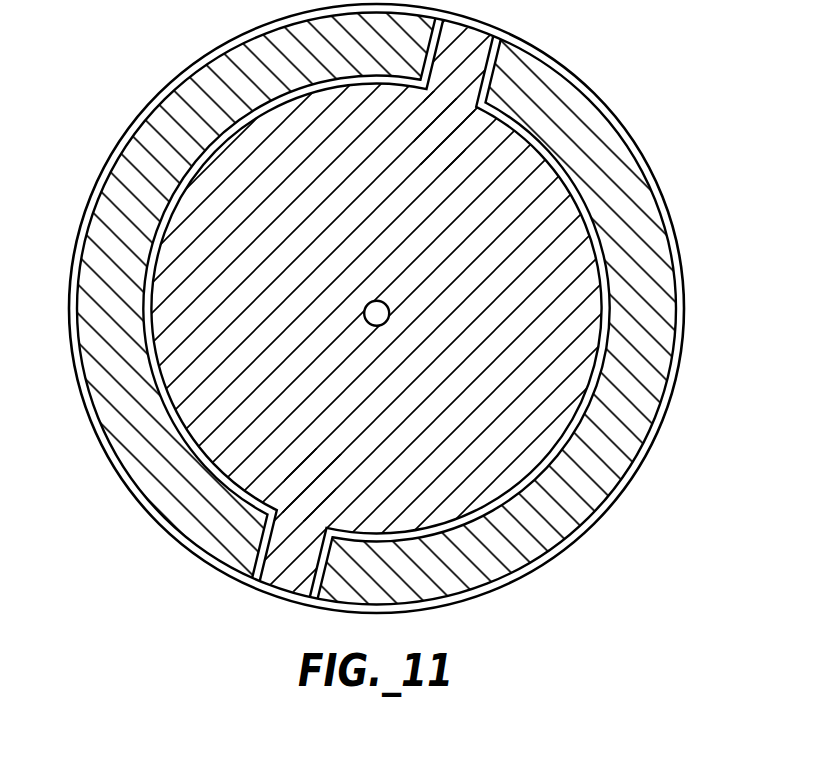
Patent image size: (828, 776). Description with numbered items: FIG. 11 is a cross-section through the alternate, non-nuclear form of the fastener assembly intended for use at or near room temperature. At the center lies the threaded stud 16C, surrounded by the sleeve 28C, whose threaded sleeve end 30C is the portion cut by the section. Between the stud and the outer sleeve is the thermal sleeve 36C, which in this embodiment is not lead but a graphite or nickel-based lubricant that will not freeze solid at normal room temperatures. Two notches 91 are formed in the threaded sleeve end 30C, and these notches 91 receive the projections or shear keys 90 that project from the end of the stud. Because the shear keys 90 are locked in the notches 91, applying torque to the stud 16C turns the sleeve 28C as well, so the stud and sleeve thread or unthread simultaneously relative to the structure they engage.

The stud 16C is at (578, 257).
The sleeve 28C is at (653, 343).
The threaded sleeve end 30C is at (587, 117).
The thermal sleeve 36C is at (170, 147).
The shear keys 90 is at (480, 33).
The notches 91 is at (500, 77).